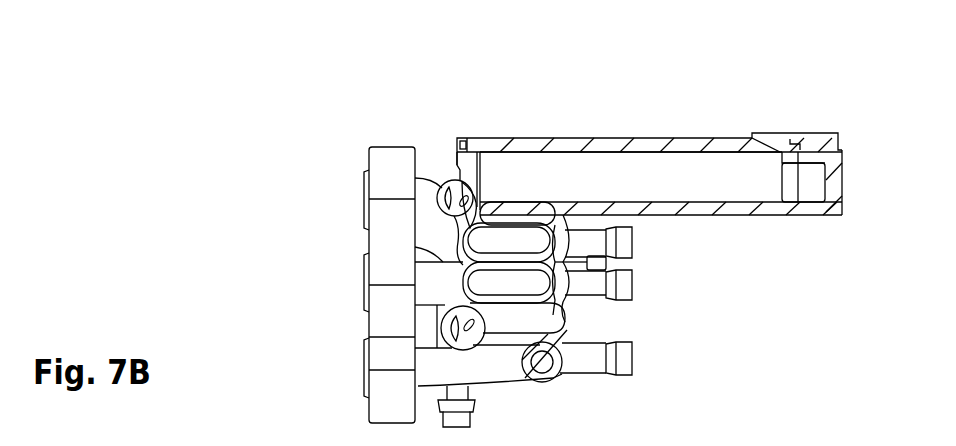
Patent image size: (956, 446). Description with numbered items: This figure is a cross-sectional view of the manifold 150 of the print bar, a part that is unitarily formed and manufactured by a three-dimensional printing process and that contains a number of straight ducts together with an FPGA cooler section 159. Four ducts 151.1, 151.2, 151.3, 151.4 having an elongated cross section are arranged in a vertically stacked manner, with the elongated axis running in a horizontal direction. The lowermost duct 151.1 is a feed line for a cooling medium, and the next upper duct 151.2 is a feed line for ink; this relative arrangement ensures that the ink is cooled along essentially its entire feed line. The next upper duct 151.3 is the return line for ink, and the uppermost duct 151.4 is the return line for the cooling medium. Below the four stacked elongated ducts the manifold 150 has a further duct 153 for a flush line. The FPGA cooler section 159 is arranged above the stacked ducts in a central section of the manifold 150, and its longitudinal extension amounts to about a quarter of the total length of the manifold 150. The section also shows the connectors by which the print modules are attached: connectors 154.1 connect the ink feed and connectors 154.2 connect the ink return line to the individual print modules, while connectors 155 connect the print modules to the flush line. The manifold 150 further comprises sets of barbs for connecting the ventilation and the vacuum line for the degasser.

The manifold 150 is at (792, 95).
The FPGA cooler section 159 is at (618, 137).
The lowermost duct 151.1 is at (540, 362).
The ink feed duct 151.2 is at (522, 287).
The ink return duct 151.3 is at (513, 248).
The uppermost duct 151.4 is at (515, 212).
The ink feed connector 154.1 is at (623, 295).
The ink return line connector 154.2 is at (623, 252).
The flush line connector 155 is at (618, 363).
The flush line duct 153 is at (567, 368).